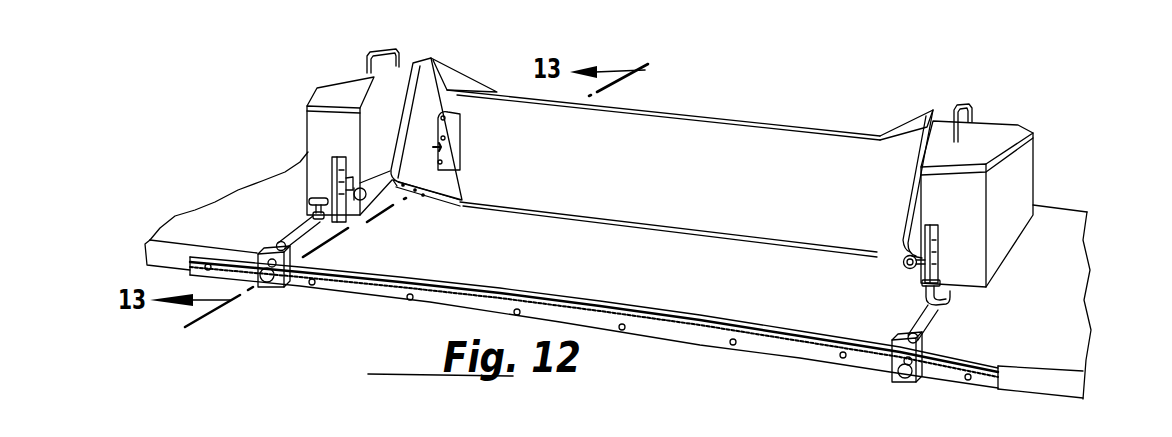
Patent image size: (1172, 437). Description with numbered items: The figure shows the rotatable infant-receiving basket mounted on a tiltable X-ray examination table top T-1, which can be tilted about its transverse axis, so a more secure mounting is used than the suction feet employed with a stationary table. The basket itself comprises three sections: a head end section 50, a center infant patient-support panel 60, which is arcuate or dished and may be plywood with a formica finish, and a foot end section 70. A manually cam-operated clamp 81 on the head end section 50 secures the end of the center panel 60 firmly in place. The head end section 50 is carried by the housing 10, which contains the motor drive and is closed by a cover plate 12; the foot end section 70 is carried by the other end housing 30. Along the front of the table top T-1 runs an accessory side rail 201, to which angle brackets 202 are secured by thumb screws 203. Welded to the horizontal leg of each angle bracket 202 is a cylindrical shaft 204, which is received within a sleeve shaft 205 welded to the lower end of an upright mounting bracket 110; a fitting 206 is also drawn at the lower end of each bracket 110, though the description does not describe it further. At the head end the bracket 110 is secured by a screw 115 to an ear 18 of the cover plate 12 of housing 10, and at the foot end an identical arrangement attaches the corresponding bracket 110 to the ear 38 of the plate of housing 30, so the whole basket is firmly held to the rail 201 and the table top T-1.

The housing 10 is at (328, 132).
The cover plate 12 is at (377, 127).
The mounting bracket 110 is at (337, 155).
The valve fitting 206 is at (310, 201).
The cylindrical shaft 204 is at (283, 240).
The head end section 50 is at (442, 54).
The clamp 81 is at (460, 140).
The thumb screw 115 is at (395, 203).
The ear 18 is at (350, 206).
The angle bracket 202 is at (276, 286).
The thumb screw 203 is at (900, 378).
The sleeve shaft 205 is at (952, 300).
The center infant patient-support panel 60 is at (698, 140).
The foot end section 70 is at (929, 98).
The end housing 30 is at (1014, 120).
The ear 38 is at (903, 268).
The accessory side rail 201 is at (987, 378).
The table top T-1 is at (1073, 323).